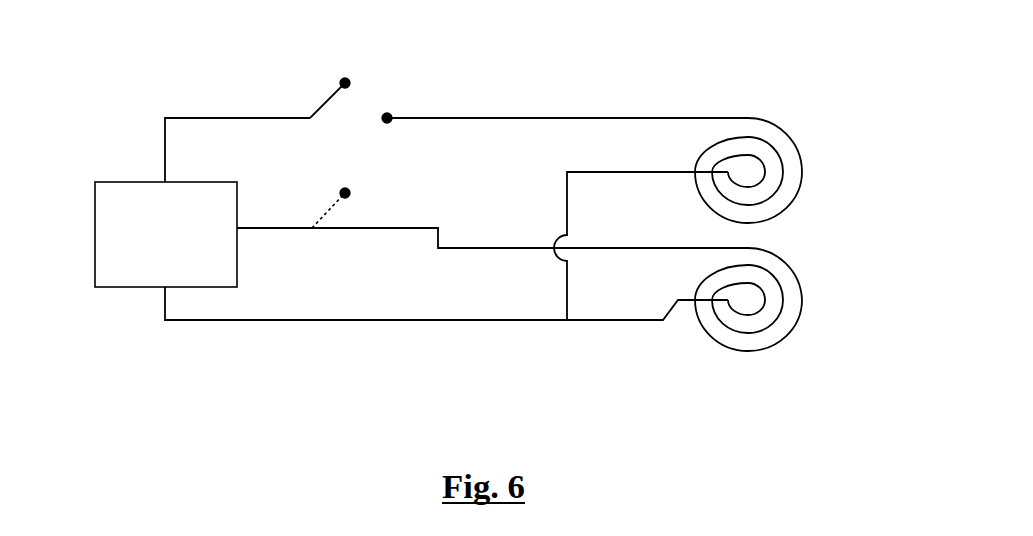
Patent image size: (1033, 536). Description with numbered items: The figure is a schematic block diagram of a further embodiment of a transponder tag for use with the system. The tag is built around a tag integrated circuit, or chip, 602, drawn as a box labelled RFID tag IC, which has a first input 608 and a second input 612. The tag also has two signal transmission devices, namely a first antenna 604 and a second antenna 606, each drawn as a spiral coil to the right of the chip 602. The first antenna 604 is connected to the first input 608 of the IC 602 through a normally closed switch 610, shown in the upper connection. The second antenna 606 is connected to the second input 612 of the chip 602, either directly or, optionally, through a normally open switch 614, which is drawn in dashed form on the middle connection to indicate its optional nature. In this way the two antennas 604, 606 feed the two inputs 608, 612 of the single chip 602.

The tag integrated circuit 602 is at (140, 289).
The first signal transmission device 604 is at (793, 143).
The second signal transmission device 606 is at (793, 281).
The first input 608 is at (165, 167).
The normally closed switch 610 is at (380, 59).
The second input 612 is at (238, 232).
The normally open switch 614 is at (320, 213).